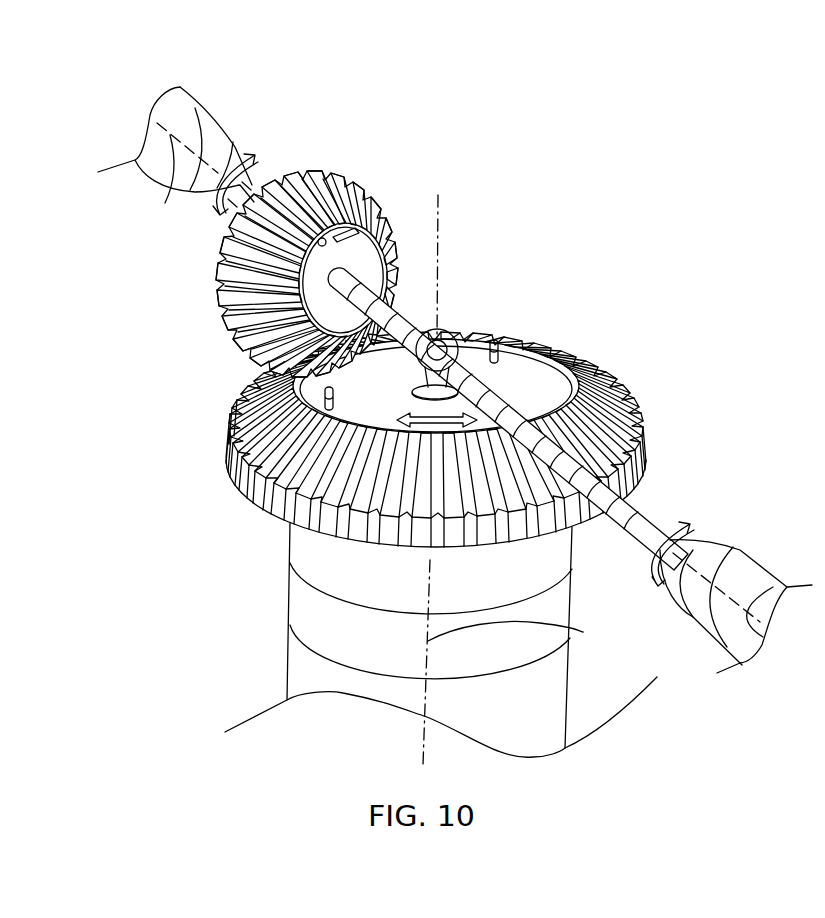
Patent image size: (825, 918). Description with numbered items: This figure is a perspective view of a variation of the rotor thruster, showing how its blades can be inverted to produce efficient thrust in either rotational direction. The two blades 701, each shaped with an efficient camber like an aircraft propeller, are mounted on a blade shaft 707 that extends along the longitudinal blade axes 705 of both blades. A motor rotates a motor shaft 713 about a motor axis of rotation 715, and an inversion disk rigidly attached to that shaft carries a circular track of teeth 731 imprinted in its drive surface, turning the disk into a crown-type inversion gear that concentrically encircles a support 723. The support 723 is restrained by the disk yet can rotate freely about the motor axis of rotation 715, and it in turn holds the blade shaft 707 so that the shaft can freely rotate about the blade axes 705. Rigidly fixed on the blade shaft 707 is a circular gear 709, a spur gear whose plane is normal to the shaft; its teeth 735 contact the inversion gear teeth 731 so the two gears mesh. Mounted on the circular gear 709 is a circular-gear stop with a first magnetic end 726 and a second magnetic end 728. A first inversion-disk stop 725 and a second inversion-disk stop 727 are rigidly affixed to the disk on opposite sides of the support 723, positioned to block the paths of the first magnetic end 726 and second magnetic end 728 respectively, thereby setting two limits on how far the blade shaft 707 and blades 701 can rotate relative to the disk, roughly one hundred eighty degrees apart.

The blades 701 is at (206, 120).
The longitudinal blade axis 705 is at (166, 203).
The blade shaft 707 is at (410, 439).
The circular gear 709 is at (315, 267).
The motor shaft 713 is at (293, 549).
The motor axis of rotation 715 is at (583, 632).
The support 723 is at (441, 342).
The first inversion-disk stop 725 is at (497, 343).
The first magnetic end 726 is at (347, 225).
The second inversion-disk stop 727 is at (310, 372).
The second magnetic end 728 is at (322, 238).
The teeth 731 is at (232, 412).
The teeth 735 is at (222, 286).